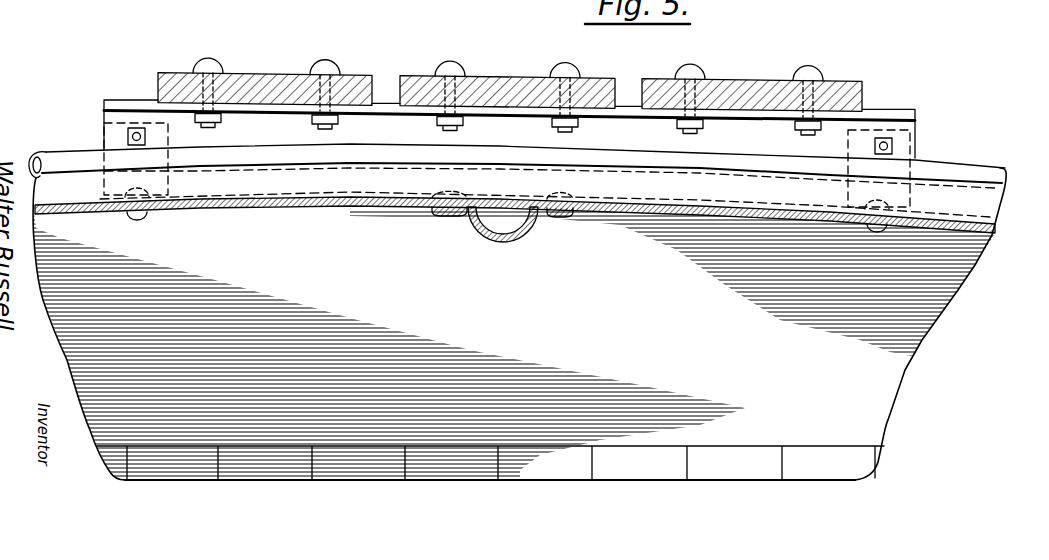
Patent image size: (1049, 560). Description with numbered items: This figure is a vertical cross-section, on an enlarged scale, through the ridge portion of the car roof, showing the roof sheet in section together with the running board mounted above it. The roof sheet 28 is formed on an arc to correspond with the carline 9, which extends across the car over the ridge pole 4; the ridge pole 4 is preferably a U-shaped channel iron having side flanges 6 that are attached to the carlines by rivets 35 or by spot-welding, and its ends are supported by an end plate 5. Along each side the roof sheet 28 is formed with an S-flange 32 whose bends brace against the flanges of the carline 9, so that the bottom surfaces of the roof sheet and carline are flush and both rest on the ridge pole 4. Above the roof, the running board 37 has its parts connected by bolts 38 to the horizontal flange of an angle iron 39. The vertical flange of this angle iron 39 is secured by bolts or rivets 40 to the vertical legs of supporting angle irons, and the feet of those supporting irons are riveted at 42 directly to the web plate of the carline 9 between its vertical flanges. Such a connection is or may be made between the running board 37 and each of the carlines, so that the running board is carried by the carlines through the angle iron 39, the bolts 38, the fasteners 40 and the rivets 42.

The ridge pole 4 is at (506, 243).
The end plate 5 is at (517, 346).
The side flanges 6 is at (432, 213).
The carline 9 is at (30, 166).
The roof sheet 28 is at (217, 205).
The S-flange 32 is at (33, 201).
The rivets 35 is at (454, 219).
The running board 37 is at (172, 76).
The bolts 38 is at (330, 74).
The angle iron 39 is at (118, 100).
The bolts or rivets 40 is at (128, 137).
The rivets 42 is at (140, 214).